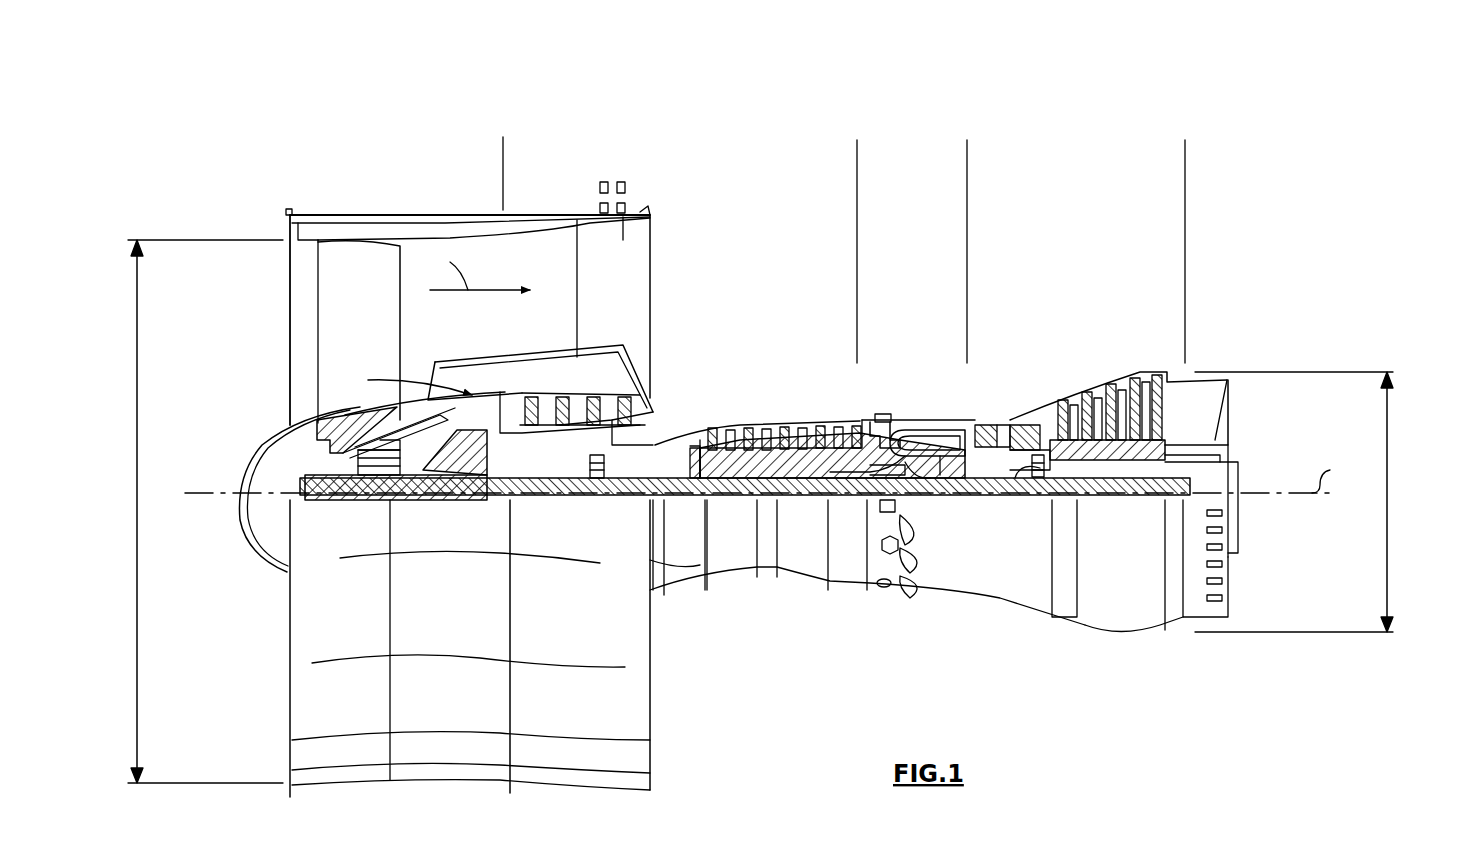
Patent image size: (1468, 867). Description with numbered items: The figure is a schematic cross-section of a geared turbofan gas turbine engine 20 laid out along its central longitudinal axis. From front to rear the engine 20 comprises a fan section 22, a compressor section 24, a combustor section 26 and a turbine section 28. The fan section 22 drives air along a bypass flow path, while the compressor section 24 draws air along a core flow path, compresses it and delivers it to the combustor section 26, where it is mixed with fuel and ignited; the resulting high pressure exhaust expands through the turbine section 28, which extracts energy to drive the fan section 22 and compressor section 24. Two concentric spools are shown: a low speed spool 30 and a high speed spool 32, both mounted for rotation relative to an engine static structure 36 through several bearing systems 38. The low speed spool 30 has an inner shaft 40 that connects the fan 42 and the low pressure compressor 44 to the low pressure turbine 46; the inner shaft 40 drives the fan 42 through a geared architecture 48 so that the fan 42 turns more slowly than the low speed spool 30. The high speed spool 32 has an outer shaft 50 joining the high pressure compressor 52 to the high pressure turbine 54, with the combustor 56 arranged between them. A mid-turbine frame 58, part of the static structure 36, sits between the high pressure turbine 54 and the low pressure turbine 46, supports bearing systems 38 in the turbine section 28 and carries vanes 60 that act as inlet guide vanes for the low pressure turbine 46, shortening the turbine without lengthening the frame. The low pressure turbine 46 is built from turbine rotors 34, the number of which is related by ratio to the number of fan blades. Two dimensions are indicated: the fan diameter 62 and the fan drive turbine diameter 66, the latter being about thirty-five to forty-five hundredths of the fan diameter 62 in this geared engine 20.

The gas turbine engine 20 is at (1212, 208).
The fan section 22 is at (495, 192).
The compressor section 24 is at (855, 142).
The combustor section 26 is at (960, 142).
The turbine section 28 is at (1180, 142).
The low speed spool 30 is at (808, 507).
The high speed spool 32 is at (842, 450).
The turbine rotors 34 is at (1120, 470).
The engine static structure 36 is at (848, 592).
The bearing systems 38 is at (362, 478).
The inner shaft 40 is at (668, 590).
The fan 42 is at (359, 330).
The low pressure compressor section 44 is at (585, 398).
The low pressure turbine section 46 is at (1112, 400).
The geared architecture 48 is at (470, 490).
The outer shaft 50 is at (922, 482).
The high pressure compressor section 52 is at (790, 470).
The high pressure turbine section 54 is at (988, 425).
The combustor 56 is at (922, 440).
The mid-turbine frame 58 is at (1030, 400).
The vanes 60 is at (1040, 468).
The fan diameter 62 is at (137, 520).
The fan drive turbine diameter 66 is at (1387, 520).